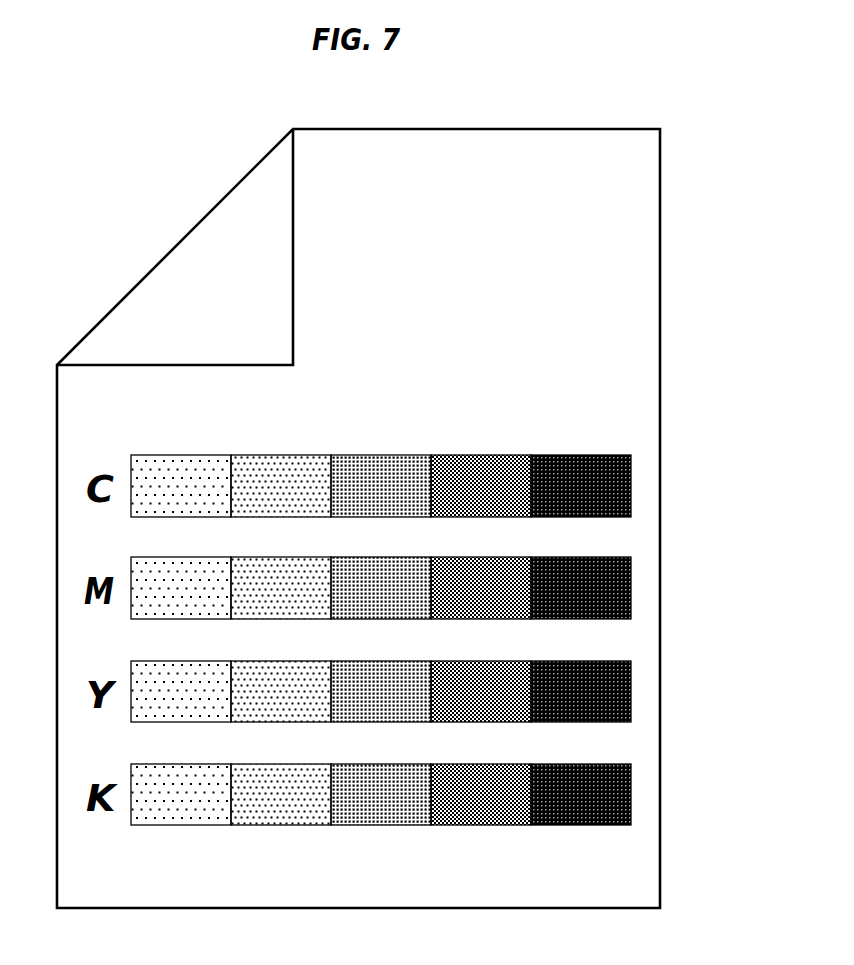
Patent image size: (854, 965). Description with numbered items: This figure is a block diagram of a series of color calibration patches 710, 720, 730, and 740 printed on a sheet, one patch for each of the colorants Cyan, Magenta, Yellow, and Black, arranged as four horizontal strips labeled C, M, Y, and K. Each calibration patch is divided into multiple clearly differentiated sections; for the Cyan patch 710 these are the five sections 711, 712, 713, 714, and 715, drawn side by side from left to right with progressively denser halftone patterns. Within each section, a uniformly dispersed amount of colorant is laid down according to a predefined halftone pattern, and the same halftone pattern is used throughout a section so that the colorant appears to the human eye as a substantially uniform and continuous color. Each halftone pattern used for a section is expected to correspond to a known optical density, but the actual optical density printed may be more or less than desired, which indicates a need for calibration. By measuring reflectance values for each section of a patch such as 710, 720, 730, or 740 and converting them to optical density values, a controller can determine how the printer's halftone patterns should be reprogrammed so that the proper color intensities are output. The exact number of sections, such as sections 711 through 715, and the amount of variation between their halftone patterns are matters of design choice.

The color calibration patch 710 is at (435, 461).
The color calibration patch 720 is at (644, 590).
The color calibration patch 730 is at (644, 693).
The color calibration patch 740 is at (644, 796).
The section 711 is at (188, 455).
The section 712 is at (283, 455).
The section 713 is at (381, 455).
The section 714 is at (484, 455).
The section 715 is at (586, 455).